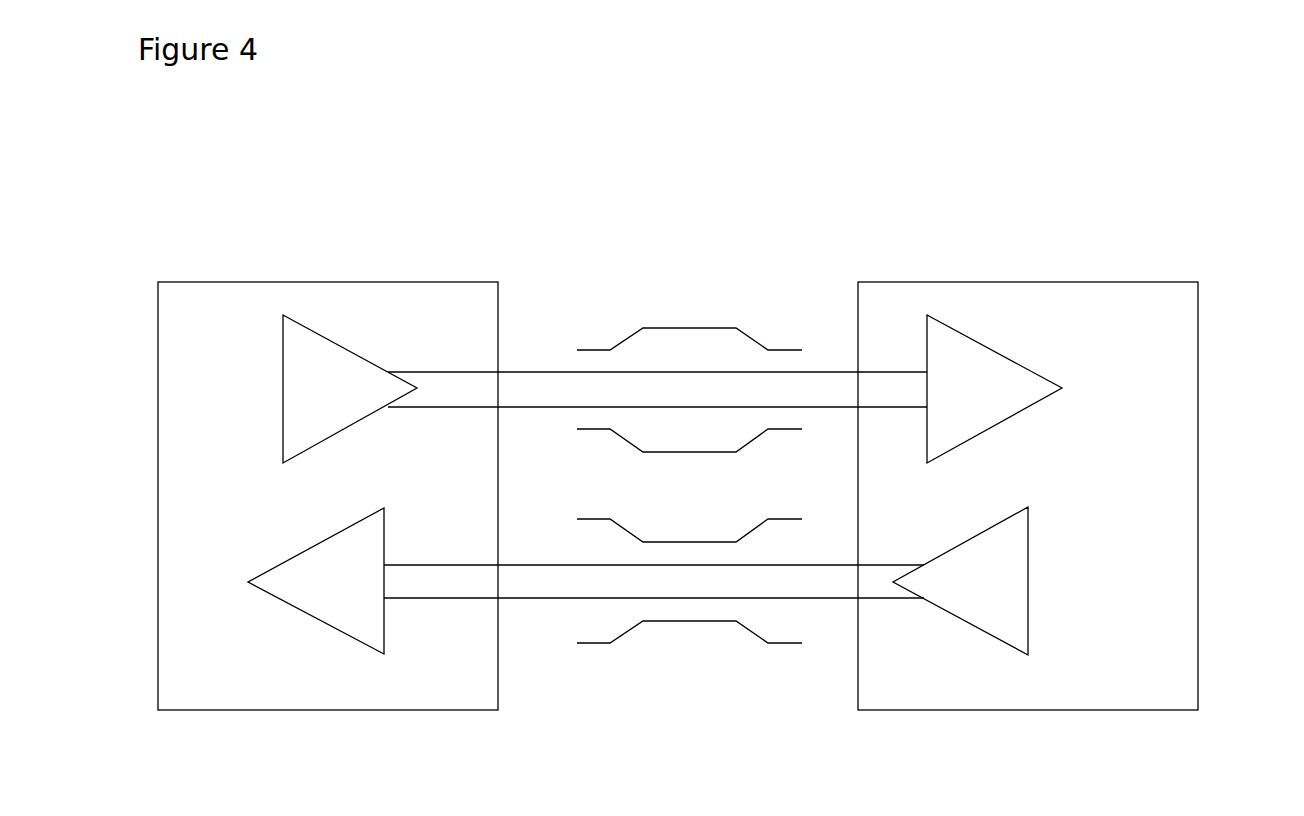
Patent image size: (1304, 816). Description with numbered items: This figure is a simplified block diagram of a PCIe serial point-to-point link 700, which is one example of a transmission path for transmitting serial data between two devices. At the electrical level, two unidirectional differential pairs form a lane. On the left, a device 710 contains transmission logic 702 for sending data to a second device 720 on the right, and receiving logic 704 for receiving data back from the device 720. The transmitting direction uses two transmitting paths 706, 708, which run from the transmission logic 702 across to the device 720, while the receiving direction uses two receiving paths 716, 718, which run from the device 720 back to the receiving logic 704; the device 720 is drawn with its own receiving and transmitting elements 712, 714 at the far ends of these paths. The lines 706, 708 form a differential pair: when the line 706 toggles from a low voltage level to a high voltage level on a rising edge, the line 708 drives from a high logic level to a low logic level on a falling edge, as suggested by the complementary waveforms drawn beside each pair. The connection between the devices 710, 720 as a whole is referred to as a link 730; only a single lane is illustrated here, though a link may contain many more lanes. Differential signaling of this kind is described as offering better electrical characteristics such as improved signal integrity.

The serial point-to-point link 700 is at (668, 192).
The transmission logic 702 is at (350, 389).
The receiving logic 704 is at (316, 581).
The transmitting path 706 is at (657, 350).
The transmitting path 708 is at (657, 429).
The device 710 is at (328, 496).
The receiver 712 is at (994, 389).
The transmitter driver 714 is at (960, 581).
The receiving path 716 is at (654, 542).
The receiving path 718 is at (654, 620).
The device 720 is at (1028, 496).
The link 730 is at (680, 283).